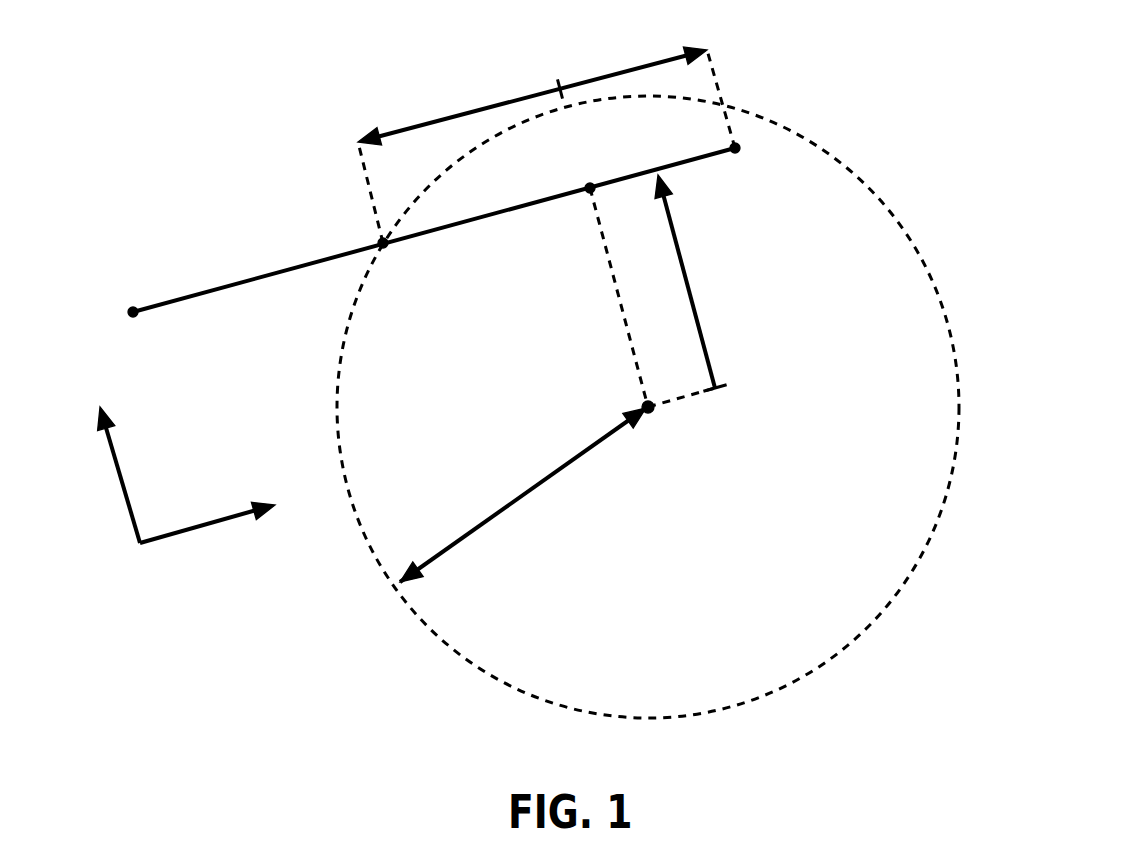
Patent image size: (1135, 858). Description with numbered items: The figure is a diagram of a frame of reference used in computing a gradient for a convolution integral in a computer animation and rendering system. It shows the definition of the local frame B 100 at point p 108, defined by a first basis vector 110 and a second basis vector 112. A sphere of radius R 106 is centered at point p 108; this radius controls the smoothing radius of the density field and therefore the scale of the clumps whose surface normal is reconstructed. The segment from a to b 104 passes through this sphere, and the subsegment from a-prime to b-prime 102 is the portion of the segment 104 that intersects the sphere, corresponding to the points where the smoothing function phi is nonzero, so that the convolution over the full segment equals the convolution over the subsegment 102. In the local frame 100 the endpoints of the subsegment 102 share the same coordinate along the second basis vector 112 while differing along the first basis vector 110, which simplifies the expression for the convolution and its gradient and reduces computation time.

The local frame B 100 is at (248, 118).
The subsegment [a'b'] 102 is at (485, 233).
The segment [ab] 104 is at (290, 247).
The radius R 106 is at (513, 478).
The point p 108 is at (667, 408).
The vector e1 110 is at (120, 445).
The vector e2 112 is at (230, 505).